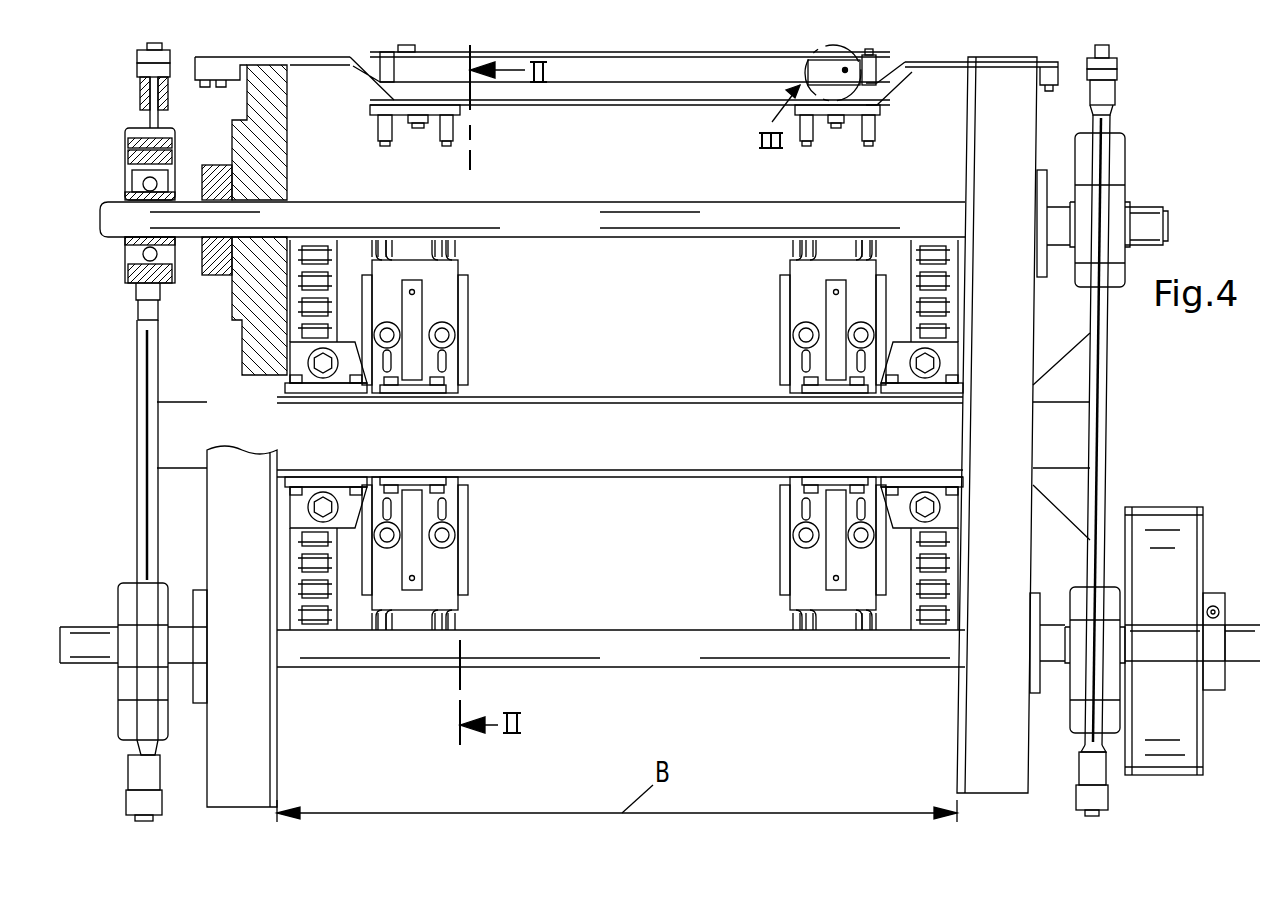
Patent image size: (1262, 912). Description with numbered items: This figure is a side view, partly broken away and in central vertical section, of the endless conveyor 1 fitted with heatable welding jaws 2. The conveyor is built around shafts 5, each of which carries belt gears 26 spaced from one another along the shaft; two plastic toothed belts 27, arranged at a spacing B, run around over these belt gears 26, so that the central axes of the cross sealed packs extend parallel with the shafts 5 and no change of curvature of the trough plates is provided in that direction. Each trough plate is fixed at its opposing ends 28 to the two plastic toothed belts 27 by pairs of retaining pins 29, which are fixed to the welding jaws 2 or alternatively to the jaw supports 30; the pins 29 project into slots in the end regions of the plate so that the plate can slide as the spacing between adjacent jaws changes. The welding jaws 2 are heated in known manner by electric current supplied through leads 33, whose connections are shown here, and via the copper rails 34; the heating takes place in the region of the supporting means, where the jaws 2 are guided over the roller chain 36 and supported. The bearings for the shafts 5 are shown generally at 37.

The endless conveyor 1 is at (290, 60).
The welding jaws 2 is at (752, 73).
The shaft 5 is at (662, 240).
The belt gear 26 is at (276, 166).
The plastic toothed belts 27 is at (250, 752).
The opposing ends 28 is at (375, 62).
The retaining pins 29 is at (412, 70).
The jaw supports 30 is at (647, 97).
The leads 33 is at (445, 362).
The copper rails 34 is at (447, 624).
The roller chain 36 is at (318, 250).
The bearings 37 is at (146, 498).